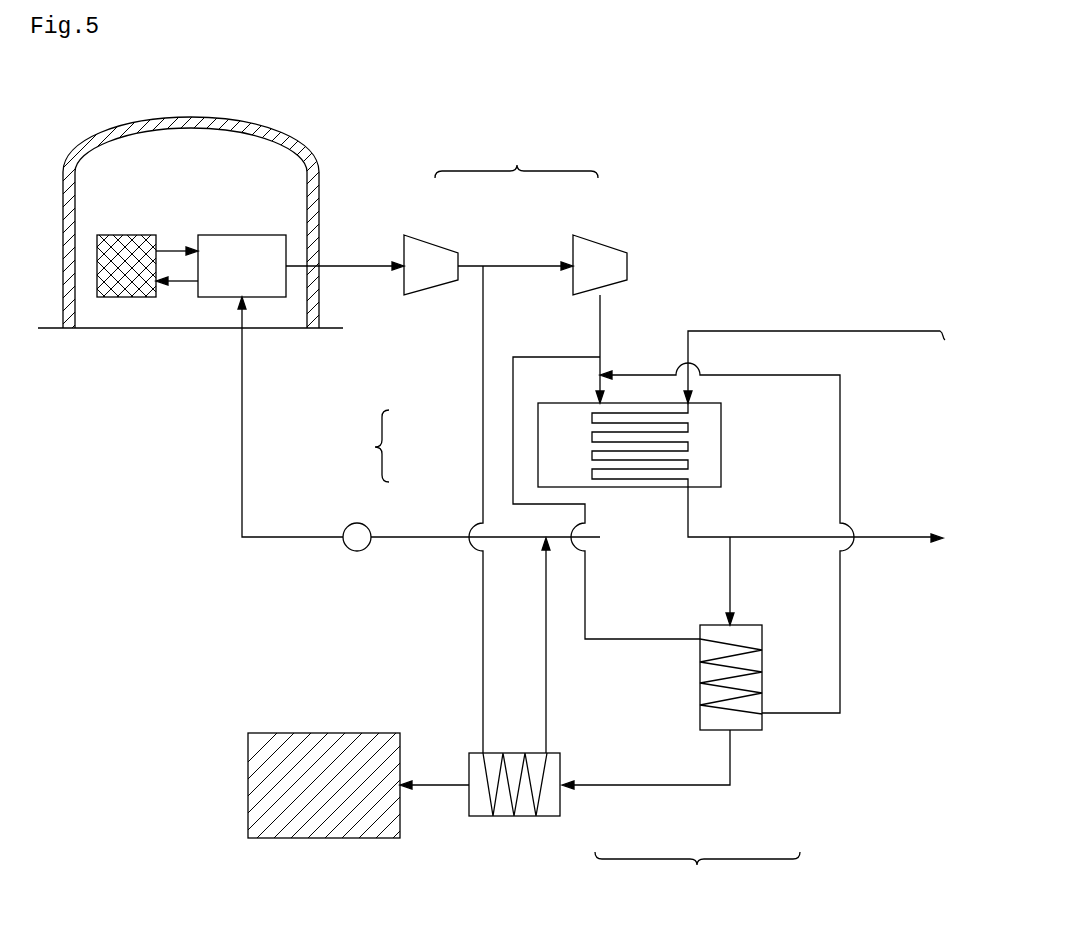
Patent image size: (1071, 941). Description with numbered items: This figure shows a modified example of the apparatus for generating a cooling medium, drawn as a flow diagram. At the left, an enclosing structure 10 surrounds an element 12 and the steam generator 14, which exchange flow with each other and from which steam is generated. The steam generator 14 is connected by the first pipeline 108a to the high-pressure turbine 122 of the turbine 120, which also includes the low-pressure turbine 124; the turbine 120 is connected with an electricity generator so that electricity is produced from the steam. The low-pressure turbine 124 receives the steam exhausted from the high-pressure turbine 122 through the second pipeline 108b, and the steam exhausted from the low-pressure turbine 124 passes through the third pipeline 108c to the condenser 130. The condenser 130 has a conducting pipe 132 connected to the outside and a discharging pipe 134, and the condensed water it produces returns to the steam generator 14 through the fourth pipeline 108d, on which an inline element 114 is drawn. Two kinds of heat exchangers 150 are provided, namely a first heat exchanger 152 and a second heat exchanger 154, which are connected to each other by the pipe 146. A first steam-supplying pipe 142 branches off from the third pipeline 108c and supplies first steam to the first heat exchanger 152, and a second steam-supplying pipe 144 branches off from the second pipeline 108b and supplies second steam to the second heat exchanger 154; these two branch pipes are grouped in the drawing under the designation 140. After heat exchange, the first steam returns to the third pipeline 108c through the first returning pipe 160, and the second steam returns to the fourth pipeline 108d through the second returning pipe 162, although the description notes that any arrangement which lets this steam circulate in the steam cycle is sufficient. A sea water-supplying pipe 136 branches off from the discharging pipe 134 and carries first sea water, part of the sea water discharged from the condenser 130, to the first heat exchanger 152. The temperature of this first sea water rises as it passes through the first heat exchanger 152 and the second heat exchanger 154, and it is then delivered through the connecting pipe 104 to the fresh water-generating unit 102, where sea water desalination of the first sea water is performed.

The containment building 10 is at (192, 122).
The reactor core 12 is at (125, 235).
The steam generator 14 is at (239, 235).
The fresh water-generating unit 102 is at (320, 733).
The connecting pipe 104 is at (440, 785).
The first pipeline 108a is at (356, 265).
The second pipeline 108b is at (538, 267).
The third pipeline 108c is at (600, 330).
The fourth pipeline 108d is at (280, 537).
The pump 114 is at (357, 551).
The turbine 120 is at (516, 158).
The high-pressure turbine 122 is at (437, 241).
The low-pressure turbine 124 is at (598, 241).
The condenser 130 is at (721, 443).
The conducting pipe 132 is at (890, 331).
The discharging pipe 134 is at (890, 538).
The sea water-supplying pipe 136 is at (730, 575).
The bypass unit 140 is at (361, 446).
The first steam-supplying pipe 142 is at (513, 422).
The second steam-supplying pipe 144 is at (483, 466).
The pipe 146 is at (648, 785).
The heat exchangers 150 is at (697, 874).
The first heat exchanger 152 is at (748, 730).
The second heat exchanger 154 is at (562, 805).
The first returning pipe 160 is at (840, 665).
The second returning pipe 162 is at (546, 690).